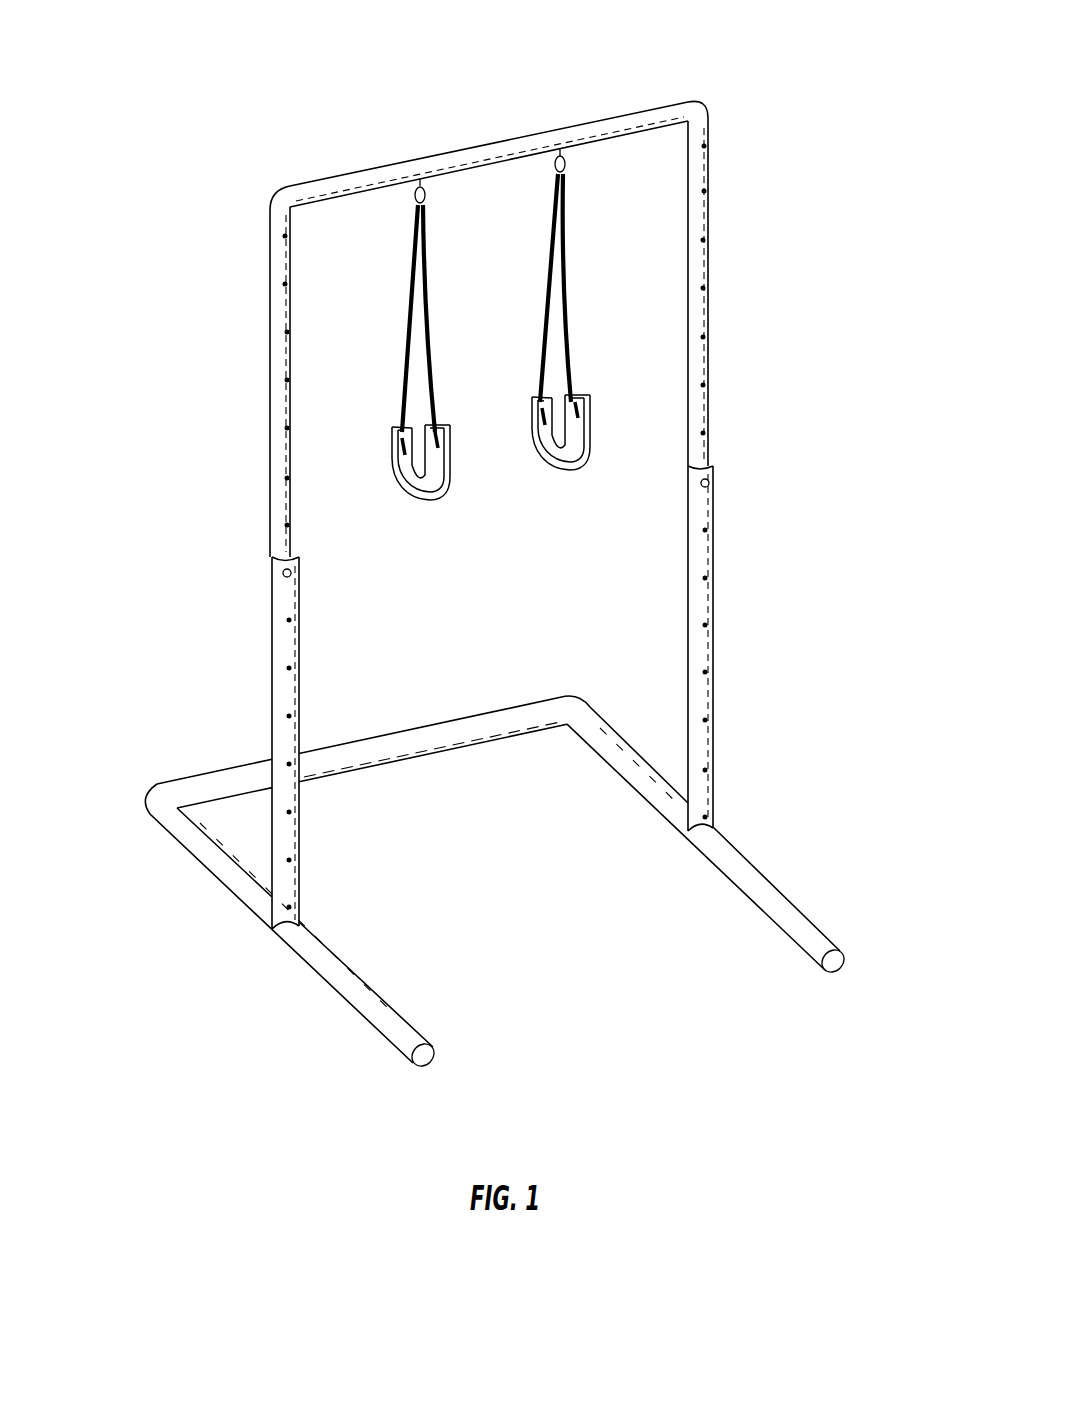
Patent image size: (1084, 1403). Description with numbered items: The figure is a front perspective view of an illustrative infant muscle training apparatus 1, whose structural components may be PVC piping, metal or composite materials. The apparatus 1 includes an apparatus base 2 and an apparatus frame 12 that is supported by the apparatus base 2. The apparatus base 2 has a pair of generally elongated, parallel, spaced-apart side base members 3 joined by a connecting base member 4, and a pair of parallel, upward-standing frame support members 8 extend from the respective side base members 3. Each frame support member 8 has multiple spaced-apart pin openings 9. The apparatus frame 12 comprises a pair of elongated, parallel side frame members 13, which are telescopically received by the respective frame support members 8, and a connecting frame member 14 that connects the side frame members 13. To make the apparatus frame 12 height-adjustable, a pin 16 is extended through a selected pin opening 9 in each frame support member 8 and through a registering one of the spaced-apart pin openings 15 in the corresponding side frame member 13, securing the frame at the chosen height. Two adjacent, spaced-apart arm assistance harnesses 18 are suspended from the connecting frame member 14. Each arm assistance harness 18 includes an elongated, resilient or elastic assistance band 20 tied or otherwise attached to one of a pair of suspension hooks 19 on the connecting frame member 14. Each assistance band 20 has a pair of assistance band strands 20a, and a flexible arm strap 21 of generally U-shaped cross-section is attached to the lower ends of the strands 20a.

The infant muscle training apparatus 1 is at (333, 68).
The apparatus base 2 is at (412, 714).
The side base members 3 is at (778, 906).
The connecting base member 4 is at (510, 720).
The frame support members 8 is at (703, 603).
The pin openings 9 is at (705, 530).
The apparatus frame 12 is at (722, 318).
The side frame members 13 is at (700, 263).
The connecting frame member 14 is at (493, 155).
The pin openings 15 is at (706, 191).
The pin 16 is at (715, 484).
The arm assistance harness 18 is at (542, 488).
The suspension hooks 19 is at (552, 172).
The assistance band 20 is at (535, 263).
The assistance band strands 20a is at (425, 333).
The arm strap 21 is at (400, 462).